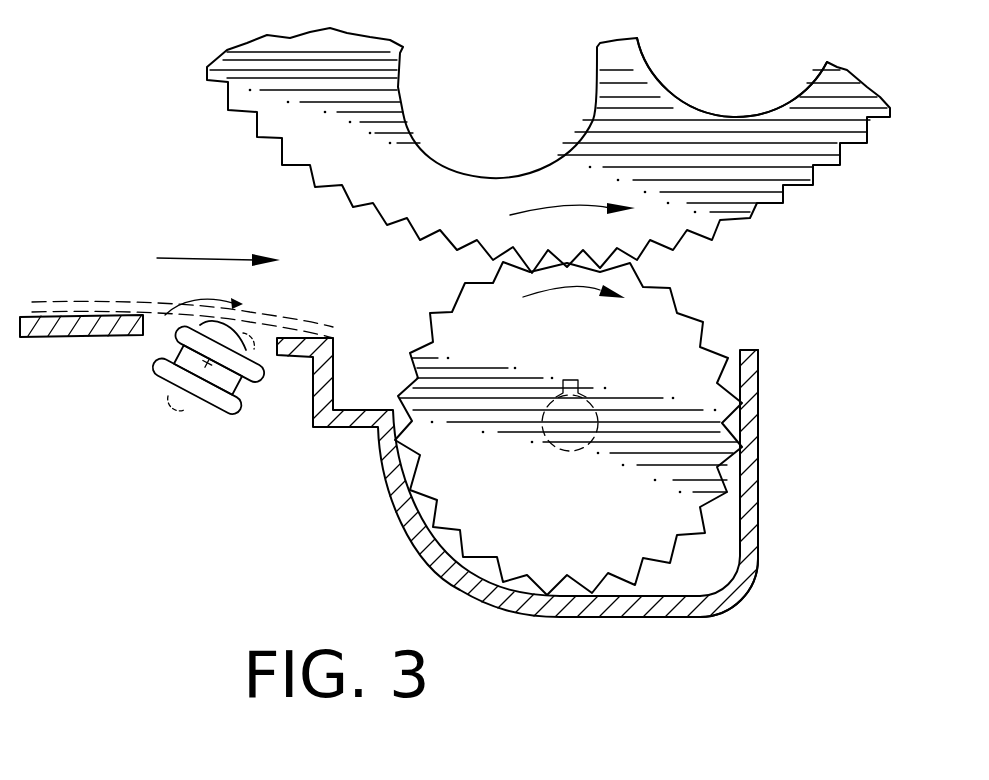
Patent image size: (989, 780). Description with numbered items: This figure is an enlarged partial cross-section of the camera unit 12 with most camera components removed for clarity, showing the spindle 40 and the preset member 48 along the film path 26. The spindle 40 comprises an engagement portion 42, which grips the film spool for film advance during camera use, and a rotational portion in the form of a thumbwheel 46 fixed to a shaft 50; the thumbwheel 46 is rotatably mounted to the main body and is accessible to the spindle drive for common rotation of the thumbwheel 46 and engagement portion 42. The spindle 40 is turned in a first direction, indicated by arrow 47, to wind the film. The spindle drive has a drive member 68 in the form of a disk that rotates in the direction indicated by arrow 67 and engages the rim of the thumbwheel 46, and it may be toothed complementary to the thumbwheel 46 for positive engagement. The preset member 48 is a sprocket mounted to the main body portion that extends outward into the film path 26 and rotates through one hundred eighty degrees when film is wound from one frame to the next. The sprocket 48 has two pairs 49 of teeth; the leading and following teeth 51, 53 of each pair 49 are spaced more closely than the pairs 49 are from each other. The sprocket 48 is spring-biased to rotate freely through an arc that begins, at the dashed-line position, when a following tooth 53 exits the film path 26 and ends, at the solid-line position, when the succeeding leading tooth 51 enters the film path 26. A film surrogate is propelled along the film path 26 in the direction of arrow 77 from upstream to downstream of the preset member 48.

The camera unit 12 is at (750, 583).
The film path 26 is at (50, 300).
The spindle 40 is at (712, 340).
The engagement portion 42 is at (581, 458).
The thumbwheel 46 is at (690, 533).
The arrow 47 is at (565, 288).
The preset member 48 is at (200, 403).
The pair of teeth 49 is at (201, 395).
The shaft 50 is at (582, 450).
The leading tooth 51 is at (165, 327).
The following tooth 53 is at (257, 330).
The arrow 67 is at (552, 217).
The drive member 68 is at (696, 103).
The arrow 77 is at (200, 253).